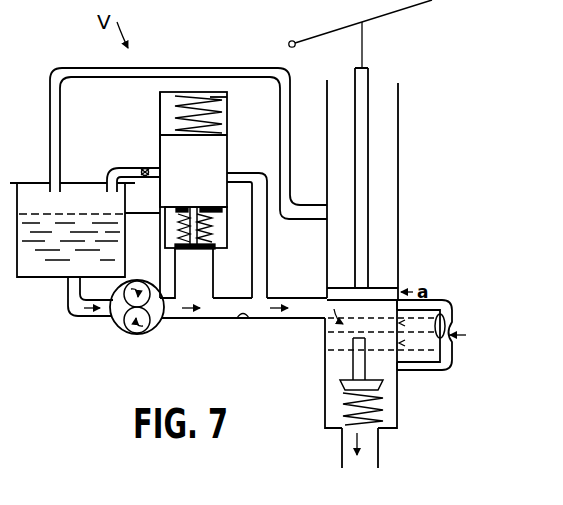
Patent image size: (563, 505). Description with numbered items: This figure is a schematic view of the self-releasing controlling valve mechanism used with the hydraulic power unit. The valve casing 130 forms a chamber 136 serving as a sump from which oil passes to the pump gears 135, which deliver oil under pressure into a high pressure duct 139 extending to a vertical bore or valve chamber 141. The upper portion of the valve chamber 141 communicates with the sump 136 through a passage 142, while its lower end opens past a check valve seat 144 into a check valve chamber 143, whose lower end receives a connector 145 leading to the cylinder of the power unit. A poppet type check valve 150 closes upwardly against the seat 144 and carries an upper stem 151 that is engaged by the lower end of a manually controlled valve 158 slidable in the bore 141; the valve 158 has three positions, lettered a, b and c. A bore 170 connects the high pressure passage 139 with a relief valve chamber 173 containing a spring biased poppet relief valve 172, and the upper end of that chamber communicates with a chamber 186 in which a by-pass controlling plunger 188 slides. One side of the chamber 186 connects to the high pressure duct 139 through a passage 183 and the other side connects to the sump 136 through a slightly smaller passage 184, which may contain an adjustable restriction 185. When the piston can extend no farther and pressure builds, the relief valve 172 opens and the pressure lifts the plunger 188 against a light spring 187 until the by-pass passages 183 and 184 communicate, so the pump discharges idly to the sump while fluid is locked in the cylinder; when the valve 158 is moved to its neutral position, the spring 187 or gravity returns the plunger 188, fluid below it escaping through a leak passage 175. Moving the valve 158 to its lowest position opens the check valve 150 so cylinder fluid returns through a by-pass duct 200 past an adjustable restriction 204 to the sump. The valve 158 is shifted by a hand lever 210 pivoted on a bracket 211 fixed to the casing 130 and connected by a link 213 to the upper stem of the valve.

The valve casing 130 is at (189, 322).
The pump gears 135 is at (121, 323).
The sump chamber 136 is at (57, 278).
The high pressure duct 139 is at (243, 318).
The valve chamber 141 is at (327, 274).
The passage 142 is at (175, 69).
The check valve chamber 143 is at (395, 409).
The check valve seat 144 is at (334, 383).
The connector 145 is at (380, 458).
The check valve 150 is at (381, 382).
The upper stem 151 is at (358, 353).
The manually controlled valve 158 is at (385, 288).
The bore 170 is at (176, 272).
The relief valve 172 is at (205, 250).
The relief valve chamber 173 is at (159, 230).
The leak passage 175 is at (138, 210).
The by-pass passage 183 is at (262, 252).
The by-pass passage 184 is at (129, 171).
The adjustable restriction 185 is at (153, 167).
The plunger chamber 186 is at (228, 164).
The light spring 187 is at (215, 106).
The by-pass controlling plunger 188 is at (207, 166).
The by-pass duct 200 is at (440, 368).
The adjustable restriction 204 is at (437, 300).
The hand lever 210 is at (406, 9).
The bracket 211 is at (289, 45).
The link 213 is at (362, 60).